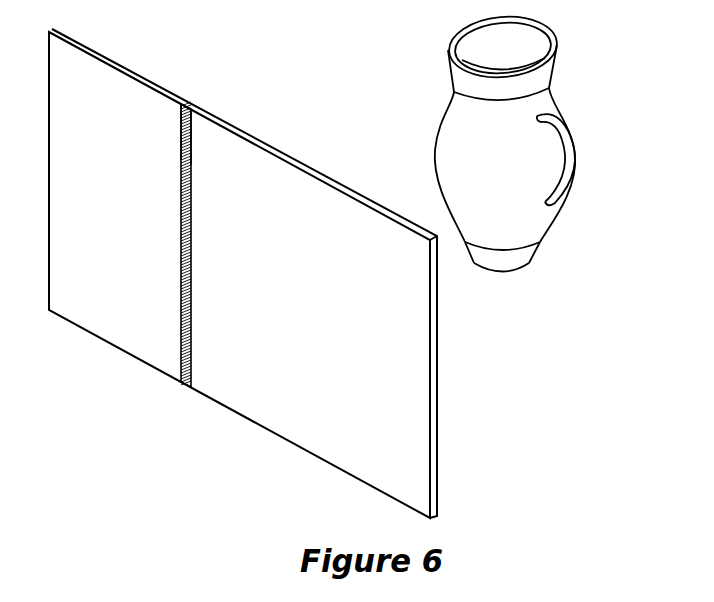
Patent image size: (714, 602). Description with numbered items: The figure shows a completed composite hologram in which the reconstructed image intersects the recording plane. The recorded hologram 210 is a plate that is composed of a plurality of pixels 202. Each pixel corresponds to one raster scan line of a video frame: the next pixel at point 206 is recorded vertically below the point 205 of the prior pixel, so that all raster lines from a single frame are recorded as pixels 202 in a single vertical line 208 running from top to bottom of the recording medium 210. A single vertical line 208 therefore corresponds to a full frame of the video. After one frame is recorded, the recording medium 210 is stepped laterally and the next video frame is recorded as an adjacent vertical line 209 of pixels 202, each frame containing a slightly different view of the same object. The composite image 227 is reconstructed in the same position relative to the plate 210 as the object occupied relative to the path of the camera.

The pixels 202 is at (153, 299).
The point of the prior pixel 205 is at (182, 243).
The point of the next pixel 206 is at (186, 250).
The single vertical line of pixels 208 is at (176, 130).
The adjacent vertical line of pixels 209 is at (204, 134).
The recorded hologram 210 is at (437, 337).
The composite image 227 is at (548, 93).